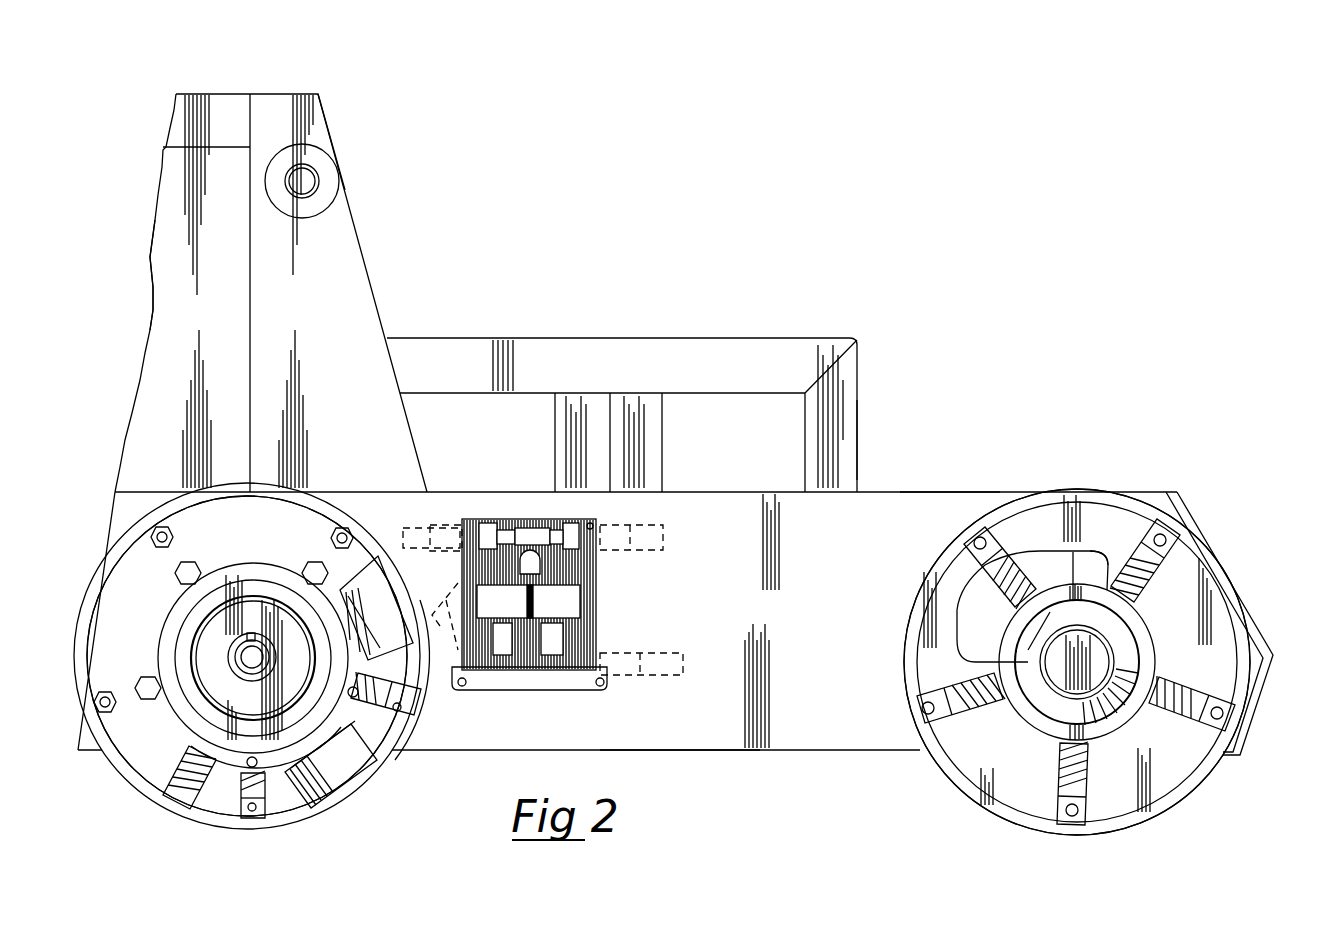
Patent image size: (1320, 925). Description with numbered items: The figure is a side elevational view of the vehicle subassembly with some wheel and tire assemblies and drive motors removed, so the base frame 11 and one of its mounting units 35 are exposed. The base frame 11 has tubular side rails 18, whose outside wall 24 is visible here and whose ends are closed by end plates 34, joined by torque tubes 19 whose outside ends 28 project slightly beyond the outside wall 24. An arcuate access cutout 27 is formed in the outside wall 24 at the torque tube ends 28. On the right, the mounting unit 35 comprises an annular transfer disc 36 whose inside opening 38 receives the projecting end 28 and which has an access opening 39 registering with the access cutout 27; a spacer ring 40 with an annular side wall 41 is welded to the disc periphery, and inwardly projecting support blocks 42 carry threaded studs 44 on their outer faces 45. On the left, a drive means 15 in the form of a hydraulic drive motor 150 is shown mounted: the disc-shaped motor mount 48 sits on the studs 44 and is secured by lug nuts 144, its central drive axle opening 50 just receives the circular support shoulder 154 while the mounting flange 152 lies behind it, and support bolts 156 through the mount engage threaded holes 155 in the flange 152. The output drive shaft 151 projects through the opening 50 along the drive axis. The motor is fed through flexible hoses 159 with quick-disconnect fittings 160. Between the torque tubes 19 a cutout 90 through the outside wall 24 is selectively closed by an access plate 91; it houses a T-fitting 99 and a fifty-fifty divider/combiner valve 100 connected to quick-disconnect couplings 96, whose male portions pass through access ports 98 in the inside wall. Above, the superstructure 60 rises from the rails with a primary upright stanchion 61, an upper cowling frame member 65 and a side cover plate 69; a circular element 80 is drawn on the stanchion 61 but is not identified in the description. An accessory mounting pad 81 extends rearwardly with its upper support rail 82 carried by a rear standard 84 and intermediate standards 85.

The superstructure 60 is at (320, 93).
The primary upright stanchions 61 is at (322, 124).
The upper cowling frame members 65 is at (226, 130).
The side cover plates 69 is at (173, 307).
The pivot boss 80 is at (326, 171).
The accessory mounting pads 81 is at (868, 347).
The upper support rail 82 is at (725, 348).
The standard 84 is at (853, 443).
The standards 85 is at (638, 395).
The base frame 11 is at (960, 489).
The mounting unit 35 is at (1128, 500).
The end plates 34 is at (1184, 522).
The motor mount 48 is at (259, 524).
The threaded stud 44 is at (346, 530).
The lug nuts 144 is at (334, 541).
The support bolts 156 is at (177, 575).
The drive axle opening 50 is at (163, 613).
The hydraulic drive motor 150 is at (173, 639).
The output drive shaft 151 is at (250, 661).
The threaded holes 155 is at (247, 762).
The spacer ring 40 is at (128, 786).
The annular side wall 41 is at (150, 793).
The outer face 45 is at (240, 816).
The support blocks 42 is at (262, 776).
The mounting flange 152 is at (355, 622).
The circular support shoulder 154 is at (355, 718).
The drive means 15 is at (372, 749).
The flexible hoses 159 is at (445, 526).
The T-fitting 99 is at (509, 525).
The quick-disconnect couplings 96 is at (531, 526).
The access port 98 is at (549, 525).
The quick-disconnect fittings 160 is at (595, 523).
The cutout 90 is at (599, 578).
The divider/combiner valve 100 is at (570, 608).
The access plate 91 is at (515, 686).
The outside wall 24 is at (806, 610).
The side rails 18 is at (712, 752).
The arcuate access cutout 27 is at (1050, 556).
The access opening 39 is at (1100, 554).
The outside ends 28 is at (1139, 626).
The torque tubes 19 is at (1152, 643).
The inside opening 38 is at (1125, 721).
The transfer disc 36 is at (1100, 774).